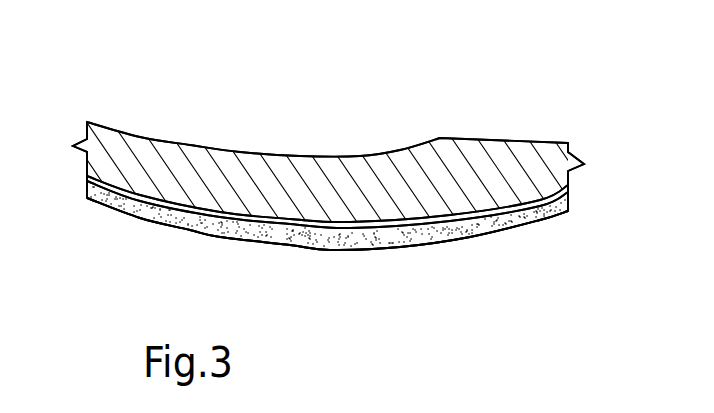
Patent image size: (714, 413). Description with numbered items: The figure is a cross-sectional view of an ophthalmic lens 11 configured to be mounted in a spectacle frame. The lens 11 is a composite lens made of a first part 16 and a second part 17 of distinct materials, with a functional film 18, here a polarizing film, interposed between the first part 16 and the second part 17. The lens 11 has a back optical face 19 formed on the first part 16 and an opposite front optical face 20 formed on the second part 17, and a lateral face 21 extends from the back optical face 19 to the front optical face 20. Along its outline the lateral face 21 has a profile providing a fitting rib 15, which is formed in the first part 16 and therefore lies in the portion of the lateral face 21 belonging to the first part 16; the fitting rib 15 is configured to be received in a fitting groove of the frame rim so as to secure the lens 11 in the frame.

The ophthalmic lens 11 is at (566, 102).
The fitting rib 15 is at (72, 148).
The first part 16 is at (124, 137).
The second part 17 is at (152, 218).
The functional film 18 is at (493, 212).
The back optical face 19 is at (362, 146).
The front optical face 20 is at (332, 266).
The lateral face 21 is at (584, 183).